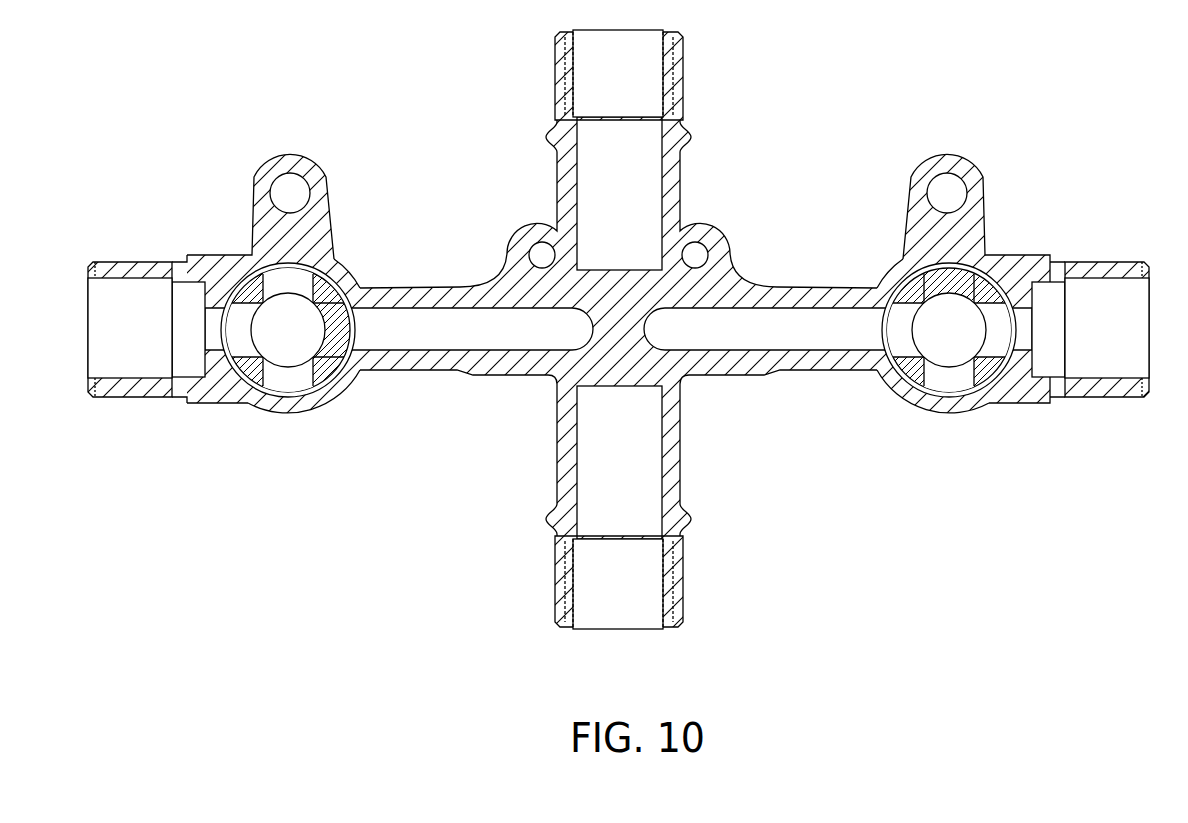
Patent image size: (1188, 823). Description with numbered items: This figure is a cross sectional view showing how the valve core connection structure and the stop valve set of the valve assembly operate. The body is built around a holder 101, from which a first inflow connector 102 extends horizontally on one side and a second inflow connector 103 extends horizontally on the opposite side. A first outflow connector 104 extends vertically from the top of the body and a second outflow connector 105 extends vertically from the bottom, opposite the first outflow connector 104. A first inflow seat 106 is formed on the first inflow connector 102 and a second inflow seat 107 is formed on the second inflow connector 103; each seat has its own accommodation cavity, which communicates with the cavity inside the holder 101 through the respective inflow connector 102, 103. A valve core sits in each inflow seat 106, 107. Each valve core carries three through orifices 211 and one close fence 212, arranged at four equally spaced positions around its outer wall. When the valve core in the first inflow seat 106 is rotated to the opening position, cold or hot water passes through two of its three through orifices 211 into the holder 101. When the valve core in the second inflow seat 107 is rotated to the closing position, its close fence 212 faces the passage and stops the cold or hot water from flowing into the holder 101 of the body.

The holder 101 is at (723, 233).
The first inflow connector 102 is at (120, 262).
The second inflow connector 103 is at (1115, 262).
The first outflow connector 104 is at (683, 77).
The second outflow connector 105 is at (683, 580).
The first inflow seat 106 is at (340, 397).
The second inflow seat 107 is at (893, 390).
The through orifices 211 is at (288, 277).
The close fence 212 is at (347, 333).